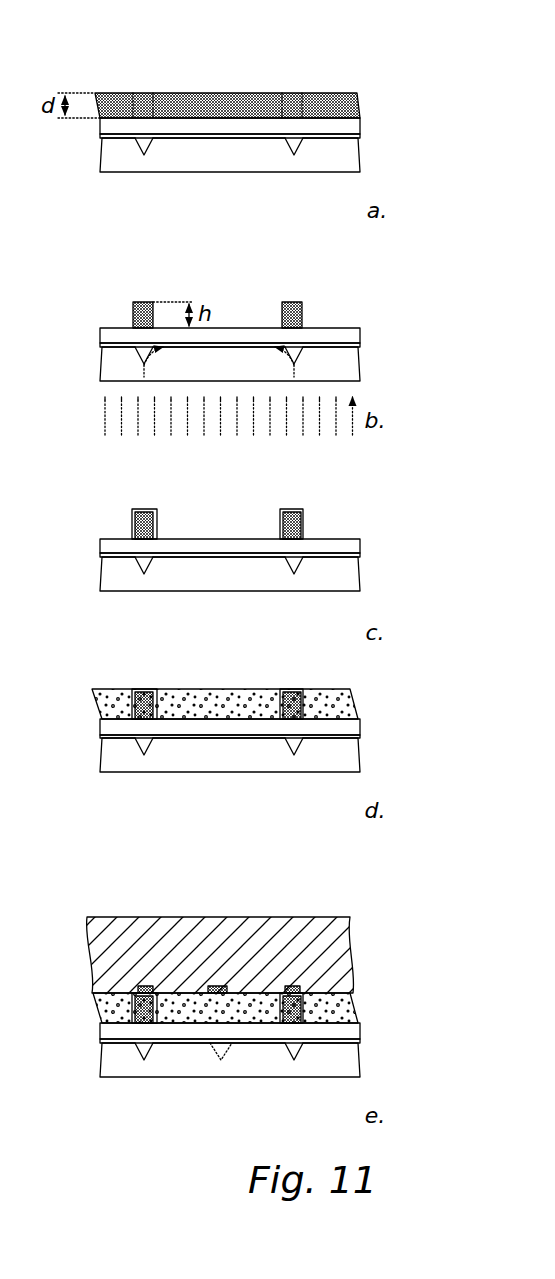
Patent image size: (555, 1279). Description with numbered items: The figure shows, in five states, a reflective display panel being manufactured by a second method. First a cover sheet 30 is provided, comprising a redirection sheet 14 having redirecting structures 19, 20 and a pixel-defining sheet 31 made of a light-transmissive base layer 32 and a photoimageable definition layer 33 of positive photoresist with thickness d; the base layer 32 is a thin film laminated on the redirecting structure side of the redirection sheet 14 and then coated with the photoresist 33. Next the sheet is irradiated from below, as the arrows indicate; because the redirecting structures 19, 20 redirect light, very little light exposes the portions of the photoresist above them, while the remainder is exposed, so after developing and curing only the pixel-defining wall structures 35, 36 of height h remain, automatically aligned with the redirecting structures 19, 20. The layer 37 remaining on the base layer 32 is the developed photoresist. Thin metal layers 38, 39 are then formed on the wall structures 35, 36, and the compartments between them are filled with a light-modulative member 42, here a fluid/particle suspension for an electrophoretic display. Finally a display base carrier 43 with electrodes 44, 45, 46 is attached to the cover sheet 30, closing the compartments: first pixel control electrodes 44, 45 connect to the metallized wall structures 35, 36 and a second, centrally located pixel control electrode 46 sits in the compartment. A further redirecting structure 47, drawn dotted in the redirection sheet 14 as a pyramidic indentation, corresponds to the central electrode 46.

The redirection sheet 14 is at (360, 163).
The redirecting structure 19 is at (148, 146).
The redirecting structure 20 is at (297, 146).
The cover sheet 30 is at (372, 95).
The pixel-defining sheet 31 is at (374, 124).
The light-transmissive base layer 32 is at (104, 136).
The photoimageable definition layer 33 is at (100, 124).
The pixel-defining wall structure 35 is at (145, 98).
The pixel-defining wall structure 36 is at (297, 98).
The layer 37 is at (112, 328).
The thin metal layer 38 is at (157, 518).
The thin metal layer 39 is at (278, 518).
The light-modulative member 42 is at (220, 695).
The display base carrier 43 is at (338, 940).
The first pixel control electrode 44 is at (146, 986).
The first pixel control electrode 45 is at (292, 986).
The second pixel control electrode 46 is at (218, 986).
The further redirecting structure 47 is at (227, 1050).